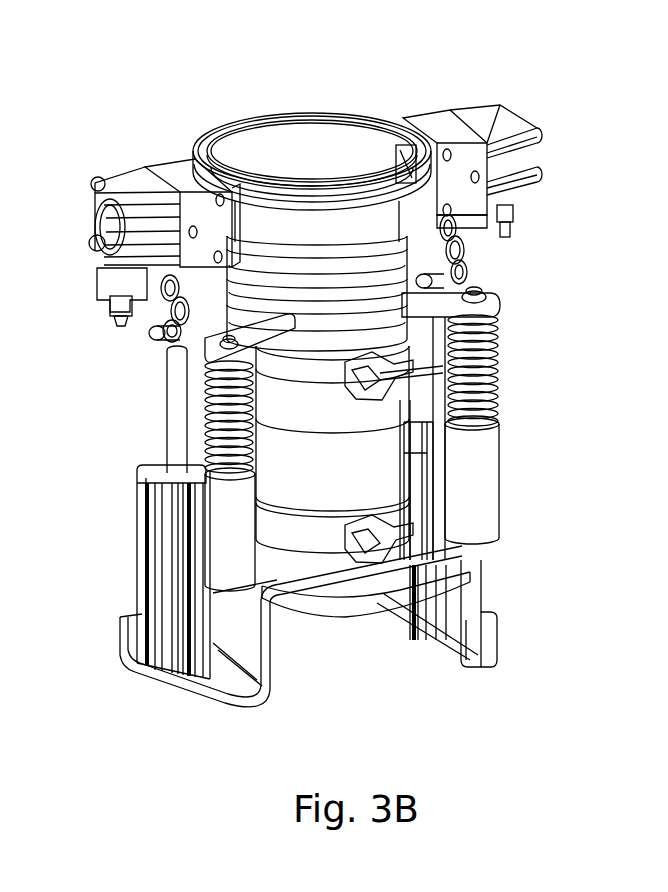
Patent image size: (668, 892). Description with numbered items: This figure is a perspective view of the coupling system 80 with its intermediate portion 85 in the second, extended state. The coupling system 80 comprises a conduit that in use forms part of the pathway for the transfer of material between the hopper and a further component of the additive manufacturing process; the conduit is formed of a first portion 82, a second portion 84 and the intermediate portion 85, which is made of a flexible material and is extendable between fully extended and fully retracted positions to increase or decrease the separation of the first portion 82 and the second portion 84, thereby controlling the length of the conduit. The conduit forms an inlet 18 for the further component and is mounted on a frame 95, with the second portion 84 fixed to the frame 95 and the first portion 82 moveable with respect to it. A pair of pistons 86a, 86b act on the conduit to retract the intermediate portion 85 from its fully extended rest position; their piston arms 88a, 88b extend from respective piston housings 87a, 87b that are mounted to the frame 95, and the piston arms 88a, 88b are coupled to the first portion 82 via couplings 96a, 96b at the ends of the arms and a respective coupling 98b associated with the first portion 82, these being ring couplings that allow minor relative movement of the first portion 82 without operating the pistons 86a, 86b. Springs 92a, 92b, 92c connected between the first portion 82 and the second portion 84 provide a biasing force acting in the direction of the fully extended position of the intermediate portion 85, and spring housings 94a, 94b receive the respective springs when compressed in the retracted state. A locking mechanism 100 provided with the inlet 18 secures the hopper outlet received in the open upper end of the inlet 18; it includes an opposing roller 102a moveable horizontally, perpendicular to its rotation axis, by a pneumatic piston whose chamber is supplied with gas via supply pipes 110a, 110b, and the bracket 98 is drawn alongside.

The inlet 18 is at (300, 133).
The coupling system 80 is at (168, 117).
The first portion 82 is at (225, 127).
The second portion 84 is at (371, 608).
The intermediate portion 85 is at (372, 452).
The piston 86a is at (495, 565).
The piston 86b is at (125, 577).
The piston housing 87a is at (481, 603).
The piston housing 87b is at (123, 657).
The piston arm 88a is at (445, 340).
The piston arm 88b is at (170, 423).
The spring 92a is at (497, 380).
The spring 92b is at (152, 492).
The spring 92c is at (205, 267).
The spring housing 94a is at (494, 507).
The spring housing 94b is at (233, 577).
The frame 95 is at (497, 638).
The coupling 96a is at (488, 258).
The coupling 96b is at (140, 330).
The chain bracket 98 is at (500, 238).
The coupling 98b is at (100, 277).
The locking mechanism 100 is at (524, 153).
The roller 102a is at (383, 158).
The supply pipe 110a is at (530, 235).
The supply pipe 110b is at (118, 312).